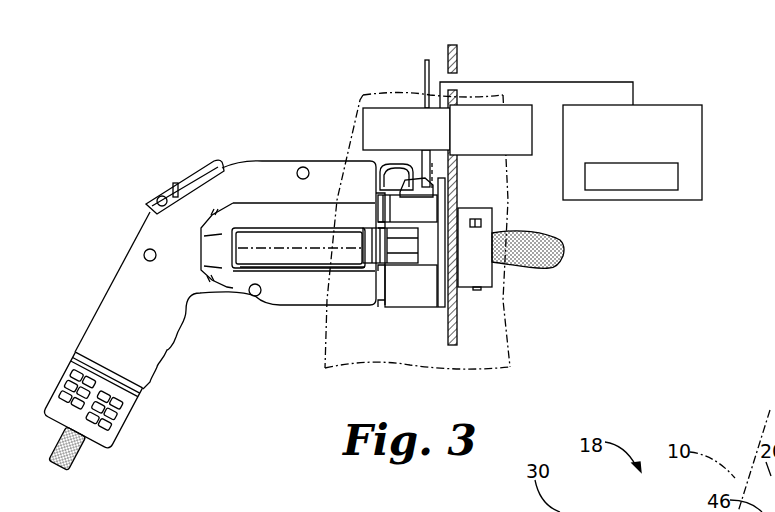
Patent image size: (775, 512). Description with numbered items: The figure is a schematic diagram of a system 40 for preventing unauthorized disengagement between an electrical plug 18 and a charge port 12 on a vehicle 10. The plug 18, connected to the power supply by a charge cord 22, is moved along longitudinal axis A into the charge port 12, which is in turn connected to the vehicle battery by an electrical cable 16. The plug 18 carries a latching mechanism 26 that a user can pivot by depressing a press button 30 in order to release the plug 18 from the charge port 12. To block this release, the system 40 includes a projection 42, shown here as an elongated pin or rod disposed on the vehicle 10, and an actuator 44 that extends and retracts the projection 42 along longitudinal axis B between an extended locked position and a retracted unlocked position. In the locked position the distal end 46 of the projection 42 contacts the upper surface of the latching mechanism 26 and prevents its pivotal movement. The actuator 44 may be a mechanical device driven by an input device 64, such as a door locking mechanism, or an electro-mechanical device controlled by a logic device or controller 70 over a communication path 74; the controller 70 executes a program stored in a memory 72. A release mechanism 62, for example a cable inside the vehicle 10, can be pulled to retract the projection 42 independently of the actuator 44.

The vehicle 10 is at (349, 152).
The charge port 12 is at (408, 338).
The electrical wire or cable 16 is at (535, 270).
The electrical plug 18 is at (236, 116).
The charge cord 22 is at (80, 448).
The latching mechanism 26 is at (407, 163).
The press button 30 is at (196, 170).
The system 40 is at (570, 26).
The projection 42 is at (430, 162).
The actuator 44 is at (363, 128).
The distal end 46 is at (380, 163).
The release mechanism 62 is at (425, 78).
The input device 64 is at (520, 156).
The logic device or controller 70 is at (703, 137).
The storage medium 72 is at (678, 176).
The communication path 74 is at (540, 82).
The longitudinal axis A is at (273, 247).
The longitudinal axis B is at (435, 177).